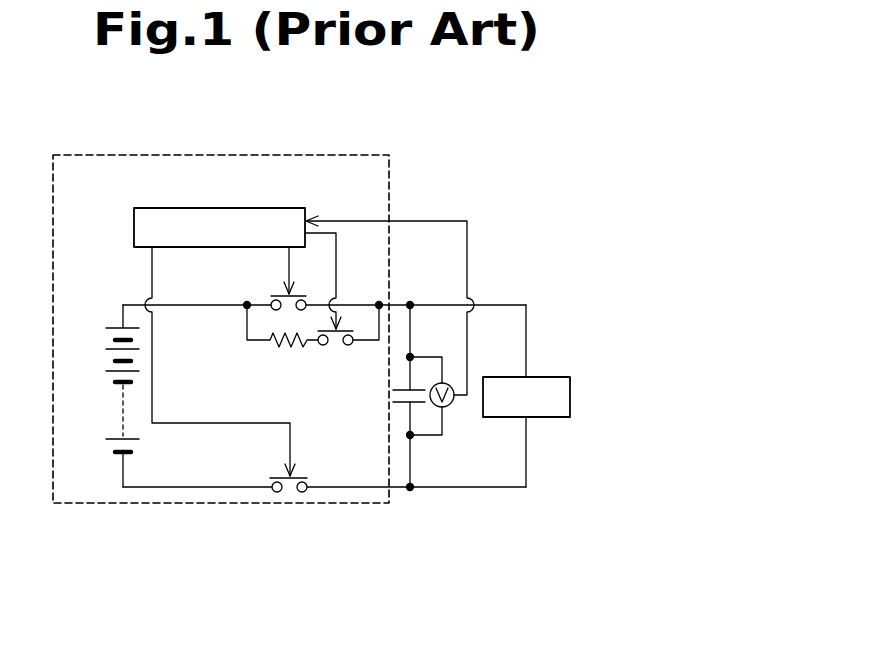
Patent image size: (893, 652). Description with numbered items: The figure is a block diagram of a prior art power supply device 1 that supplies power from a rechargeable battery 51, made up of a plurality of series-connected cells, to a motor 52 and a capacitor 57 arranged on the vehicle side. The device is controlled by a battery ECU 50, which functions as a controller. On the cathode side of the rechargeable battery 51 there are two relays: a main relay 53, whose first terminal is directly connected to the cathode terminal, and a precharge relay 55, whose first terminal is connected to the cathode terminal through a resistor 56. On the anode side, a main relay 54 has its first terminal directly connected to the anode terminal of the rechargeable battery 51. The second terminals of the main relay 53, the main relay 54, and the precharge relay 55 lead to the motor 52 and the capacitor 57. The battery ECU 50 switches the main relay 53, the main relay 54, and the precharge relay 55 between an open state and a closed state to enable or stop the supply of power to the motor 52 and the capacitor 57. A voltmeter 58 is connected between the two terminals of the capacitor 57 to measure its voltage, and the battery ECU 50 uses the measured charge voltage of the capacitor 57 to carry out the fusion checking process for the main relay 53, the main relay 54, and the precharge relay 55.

The power supply device 1 is at (392, 182).
The battery electronic control unit 50 is at (289, 207).
The rechargeable battery 51 is at (108, 330).
The motor 52 is at (553, 375).
The main relay 53 is at (303, 294).
The main relay 54 is at (303, 476).
The precharge relay 55 is at (336, 352).
The resistor 56 is at (287, 352).
The capacitor 57 is at (414, 385).
The voltmeter 58 is at (453, 406).